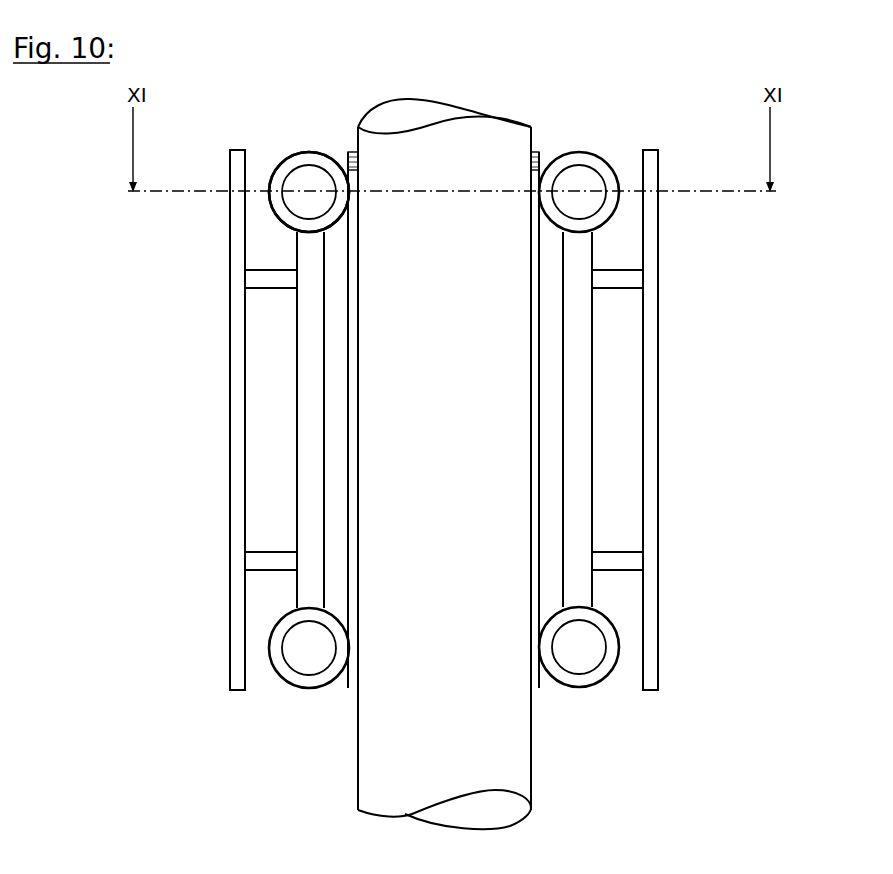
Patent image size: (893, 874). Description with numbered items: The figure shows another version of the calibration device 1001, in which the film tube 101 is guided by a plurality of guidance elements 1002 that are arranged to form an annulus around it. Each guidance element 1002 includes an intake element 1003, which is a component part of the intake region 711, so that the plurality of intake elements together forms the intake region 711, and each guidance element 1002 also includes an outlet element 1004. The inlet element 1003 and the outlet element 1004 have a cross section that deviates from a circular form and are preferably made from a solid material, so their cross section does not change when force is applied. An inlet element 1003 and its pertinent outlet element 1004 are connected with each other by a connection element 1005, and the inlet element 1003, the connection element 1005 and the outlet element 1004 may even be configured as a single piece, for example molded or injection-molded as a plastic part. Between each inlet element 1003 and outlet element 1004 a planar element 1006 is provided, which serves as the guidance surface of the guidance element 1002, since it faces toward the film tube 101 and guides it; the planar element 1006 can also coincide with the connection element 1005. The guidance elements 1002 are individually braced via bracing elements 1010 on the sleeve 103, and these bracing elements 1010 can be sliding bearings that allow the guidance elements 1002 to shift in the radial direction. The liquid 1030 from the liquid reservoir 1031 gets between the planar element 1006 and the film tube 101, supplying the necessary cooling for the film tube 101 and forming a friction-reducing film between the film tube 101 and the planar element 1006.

The film tube 101 is at (460, 163).
The sleeve 103 is at (650, 626).
The intake region 711 is at (540, 148).
The calibration device 1001 is at (593, 762).
The guidance element 1002 is at (578, 149).
The intake element 1003 is at (612, 200).
The outlet element 1004 is at (580, 688).
The connection element 1005 is at (592, 412).
The planar element 1006 is at (538, 470).
The bracing element 1010 is at (632, 282).
The liquid 1030 is at (343, 151).
The liquid reservoir 1031 is at (350, 151).